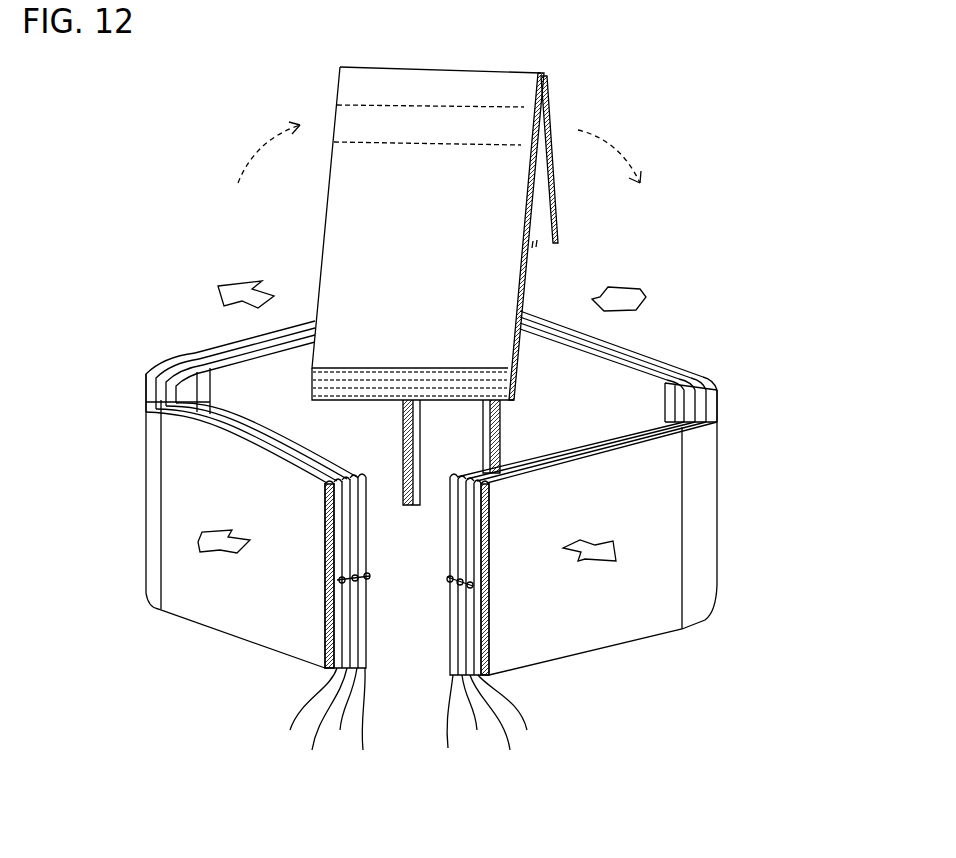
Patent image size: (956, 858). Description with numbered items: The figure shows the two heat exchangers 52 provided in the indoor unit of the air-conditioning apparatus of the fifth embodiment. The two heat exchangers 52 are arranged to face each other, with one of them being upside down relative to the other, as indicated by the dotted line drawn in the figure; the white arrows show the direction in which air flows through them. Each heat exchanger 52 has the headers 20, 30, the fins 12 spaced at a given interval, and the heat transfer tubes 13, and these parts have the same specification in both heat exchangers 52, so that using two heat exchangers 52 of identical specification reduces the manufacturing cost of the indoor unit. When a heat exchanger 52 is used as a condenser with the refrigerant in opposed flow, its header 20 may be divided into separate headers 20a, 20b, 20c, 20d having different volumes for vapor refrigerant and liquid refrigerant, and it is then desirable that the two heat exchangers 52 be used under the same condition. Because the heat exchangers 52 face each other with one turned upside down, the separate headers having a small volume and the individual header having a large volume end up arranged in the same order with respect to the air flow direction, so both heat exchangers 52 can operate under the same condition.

The fins 12 is at (313, 320).
The heat transfer tubes 13 is at (324, 518).
The header 20 is at (411, 739).
The separate header 20a is at (410, 721).
The separate header 20b is at (410, 710).
The separate header 20c is at (409, 722).
The separate header 20d is at (412, 710).
The header 30 is at (518, 308).
The heat exchanger 52 is at (167, 302).